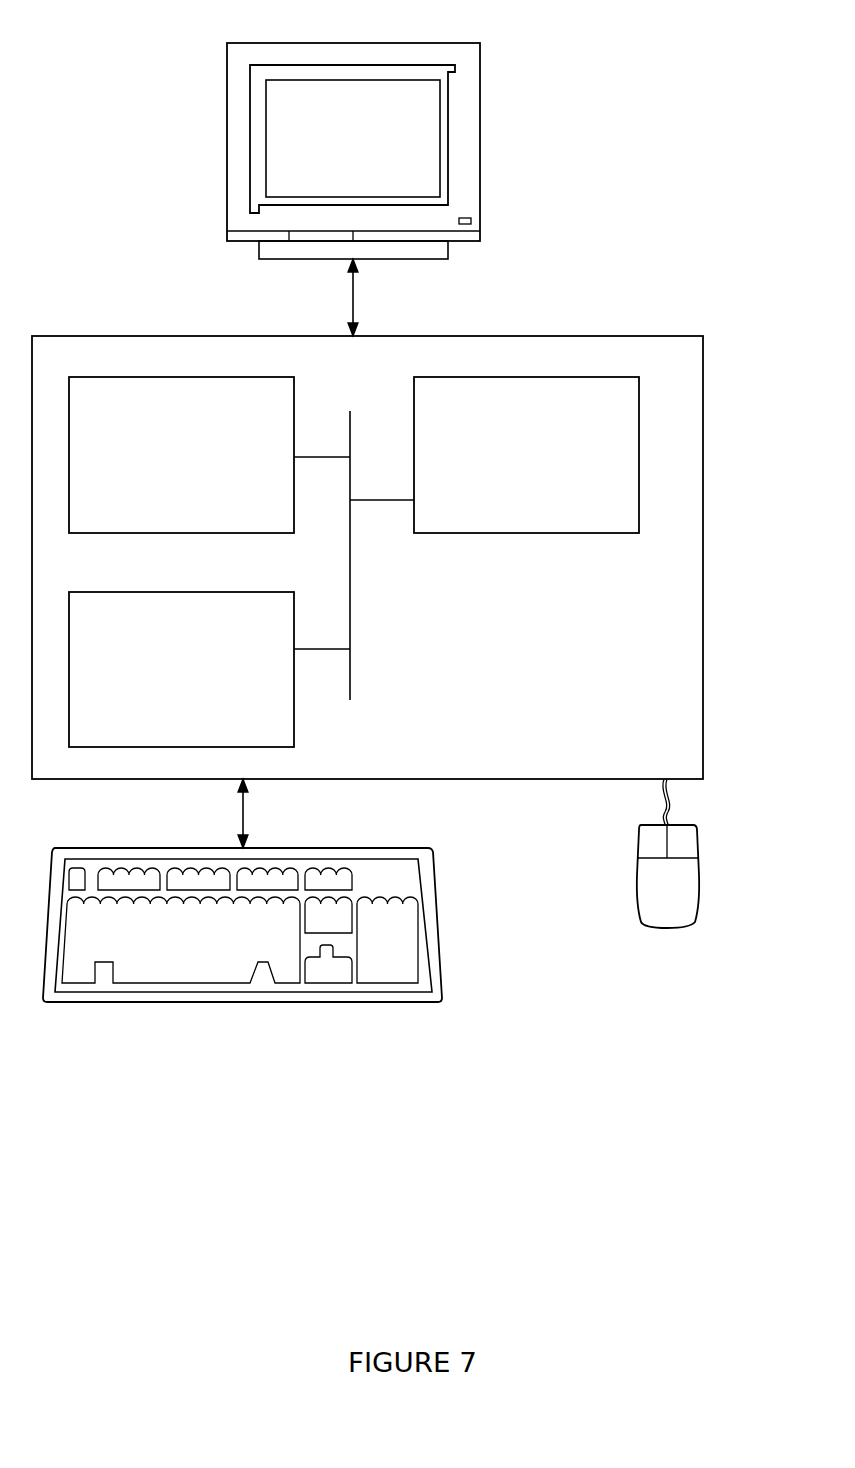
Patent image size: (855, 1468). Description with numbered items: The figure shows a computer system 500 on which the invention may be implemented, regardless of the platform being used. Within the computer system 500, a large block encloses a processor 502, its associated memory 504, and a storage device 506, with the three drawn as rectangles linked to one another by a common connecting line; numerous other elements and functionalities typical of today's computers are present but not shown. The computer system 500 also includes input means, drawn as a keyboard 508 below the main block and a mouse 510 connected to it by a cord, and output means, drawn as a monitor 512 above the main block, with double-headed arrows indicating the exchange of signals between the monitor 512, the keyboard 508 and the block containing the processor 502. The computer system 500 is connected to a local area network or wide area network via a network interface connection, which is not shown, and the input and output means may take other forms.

The computer system 500 is at (680, 210).
The processor 502 is at (521, 468).
The memory 504 is at (161, 468).
The storage device 506 is at (157, 681).
The keyboard 508 is at (151, 964).
The mouse 510 is at (645, 900).
The monitor 512 is at (331, 153).